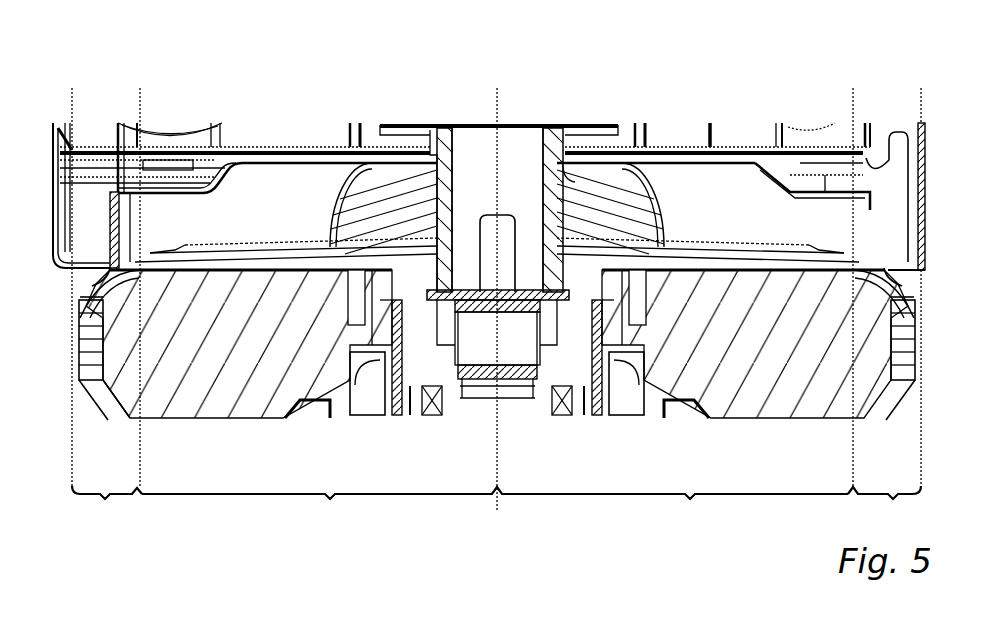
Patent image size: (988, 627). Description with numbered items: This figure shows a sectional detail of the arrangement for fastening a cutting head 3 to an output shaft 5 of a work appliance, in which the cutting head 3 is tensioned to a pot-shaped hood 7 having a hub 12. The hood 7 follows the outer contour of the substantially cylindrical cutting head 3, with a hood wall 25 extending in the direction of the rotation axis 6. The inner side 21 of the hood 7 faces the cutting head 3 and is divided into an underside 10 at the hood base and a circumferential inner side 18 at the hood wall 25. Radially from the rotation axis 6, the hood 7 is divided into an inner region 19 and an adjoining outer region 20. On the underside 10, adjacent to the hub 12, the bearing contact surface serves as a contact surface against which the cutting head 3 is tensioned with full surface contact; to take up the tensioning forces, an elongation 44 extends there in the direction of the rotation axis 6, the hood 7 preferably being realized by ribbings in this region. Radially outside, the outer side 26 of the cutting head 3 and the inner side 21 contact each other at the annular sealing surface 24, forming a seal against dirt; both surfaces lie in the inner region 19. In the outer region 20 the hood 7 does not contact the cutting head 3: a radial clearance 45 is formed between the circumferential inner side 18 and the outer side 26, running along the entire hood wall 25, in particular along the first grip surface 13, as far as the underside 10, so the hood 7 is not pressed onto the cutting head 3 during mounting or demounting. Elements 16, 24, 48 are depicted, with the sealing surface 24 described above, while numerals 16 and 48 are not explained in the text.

The cutting head 3 is at (245, 345).
The output shaft 5 is at (525, 155).
The rotation axis 6 is at (498, 426).
The hood 7 is at (340, 198).
The underside 10 is at (140, 272).
The hub 12 is at (440, 148).
The first grip surface 13 is at (100, 360).
The bearing 16 is at (398, 360).
The circumferential inner side 18 is at (100, 338).
The inner region 19 is at (495, 506).
The outer region 20 is at (496, 505).
The inner side 21 is at (103, 296).
The sealing surface 24 is at (146, 292).
The hood wall 25 is at (100, 313).
The outer side of the cutting head 26 is at (103, 413).
The elongation 44 is at (418, 220).
The clearance 45 is at (105, 378).
The bracket 48 is at (215, 240).